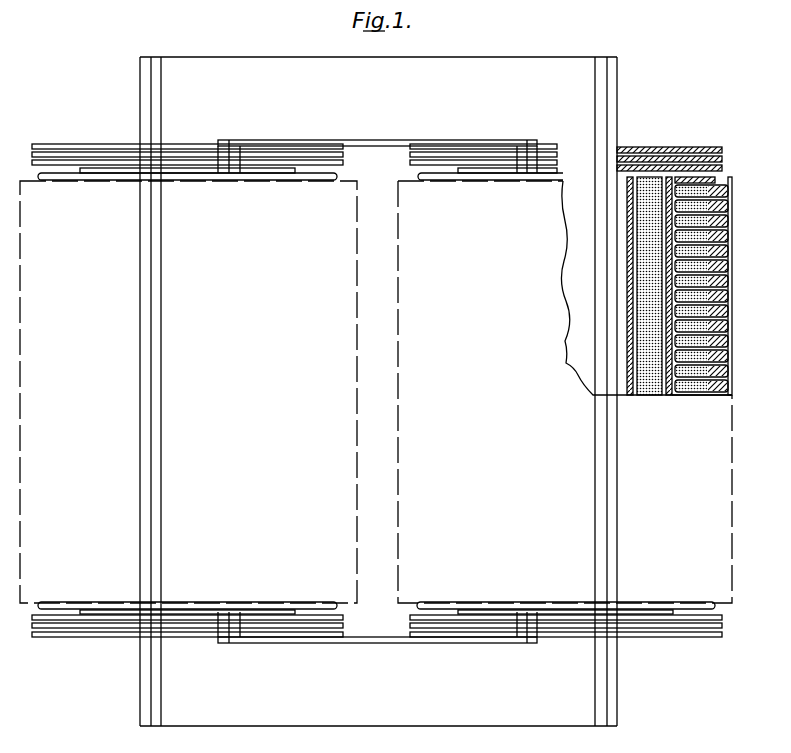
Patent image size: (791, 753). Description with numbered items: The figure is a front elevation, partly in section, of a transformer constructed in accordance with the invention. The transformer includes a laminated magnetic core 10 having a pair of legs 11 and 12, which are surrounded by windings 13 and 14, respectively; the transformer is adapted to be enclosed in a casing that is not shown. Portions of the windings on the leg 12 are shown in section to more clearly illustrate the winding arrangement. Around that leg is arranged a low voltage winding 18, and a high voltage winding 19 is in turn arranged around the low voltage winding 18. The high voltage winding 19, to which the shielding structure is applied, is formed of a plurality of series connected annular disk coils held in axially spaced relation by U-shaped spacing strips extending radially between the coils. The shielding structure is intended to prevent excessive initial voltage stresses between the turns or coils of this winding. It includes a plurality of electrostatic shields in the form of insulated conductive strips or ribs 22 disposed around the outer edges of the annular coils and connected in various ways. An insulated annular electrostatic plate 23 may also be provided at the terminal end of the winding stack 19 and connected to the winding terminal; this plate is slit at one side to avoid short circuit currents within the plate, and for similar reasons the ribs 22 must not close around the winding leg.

The laminated magnetic core 10 is at (476, 57).
The leg 11 is at (165, 128).
The leg 12 is at (586, 121).
The winding 13 is at (357, 523).
The winding 14 is at (398, 558).
The low voltage winding 18 is at (651, 181).
The high voltage winding 19 is at (691, 392).
The insulated conductive strips or ribs 22 is at (733, 250).
The insulated annular electrostatic plate 23 is at (712, 180).